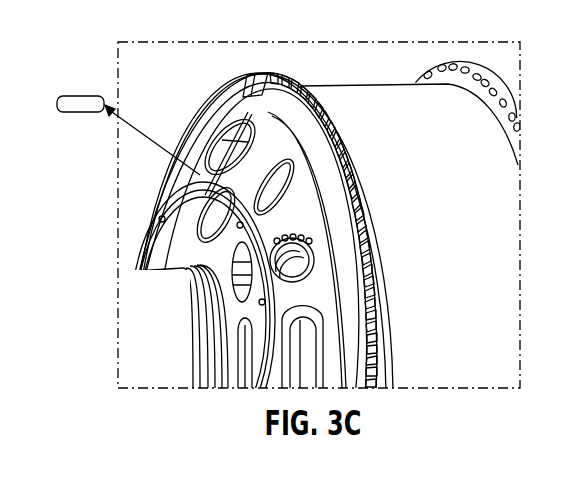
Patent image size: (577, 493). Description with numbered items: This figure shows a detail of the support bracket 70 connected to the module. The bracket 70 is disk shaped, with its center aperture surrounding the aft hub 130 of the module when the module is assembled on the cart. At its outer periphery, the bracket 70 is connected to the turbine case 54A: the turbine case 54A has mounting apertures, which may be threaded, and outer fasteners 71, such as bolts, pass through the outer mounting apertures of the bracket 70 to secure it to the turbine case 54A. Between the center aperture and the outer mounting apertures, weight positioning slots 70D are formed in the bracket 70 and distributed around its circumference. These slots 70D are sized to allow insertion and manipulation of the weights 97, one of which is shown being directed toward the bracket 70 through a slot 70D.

The bracket 70 is at (240, 110).
The weight positioning slots 70D is at (230, 132).
The outer fasteners 71 is at (247, 97).
The turbine case 54A is at (396, 86).
The weights 97 is at (61, 95).
The aft hub 130 is at (130, 305).